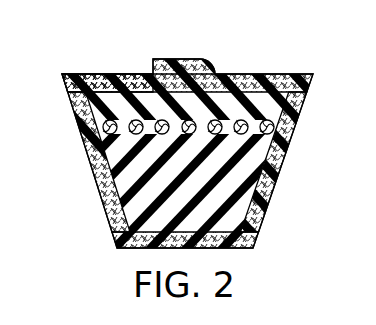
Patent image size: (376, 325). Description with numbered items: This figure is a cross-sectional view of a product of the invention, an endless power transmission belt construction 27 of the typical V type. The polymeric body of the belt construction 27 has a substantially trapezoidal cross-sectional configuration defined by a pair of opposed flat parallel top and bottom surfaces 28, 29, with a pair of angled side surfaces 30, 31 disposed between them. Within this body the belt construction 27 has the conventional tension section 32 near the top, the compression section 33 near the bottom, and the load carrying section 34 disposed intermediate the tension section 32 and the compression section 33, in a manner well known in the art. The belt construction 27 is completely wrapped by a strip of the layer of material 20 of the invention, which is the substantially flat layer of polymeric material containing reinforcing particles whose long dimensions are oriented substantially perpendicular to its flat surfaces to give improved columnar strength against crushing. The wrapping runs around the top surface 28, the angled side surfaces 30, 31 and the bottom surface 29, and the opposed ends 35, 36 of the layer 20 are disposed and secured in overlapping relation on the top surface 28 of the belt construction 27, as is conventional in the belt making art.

The layer of material 20 is at (84, 153).
The belt construction 27 is at (297, 61).
The top surface 28 is at (266, 75).
The bottom surface 29 is at (232, 248).
The side surface 30 is at (101, 184).
The side surface 31 is at (288, 160).
The tension section 32 is at (260, 106).
The compression section 33 is at (238, 181).
The load carrying section 34 is at (285, 124).
The end of the layer 35 is at (191, 60).
The end of the layer 36 is at (166, 73).